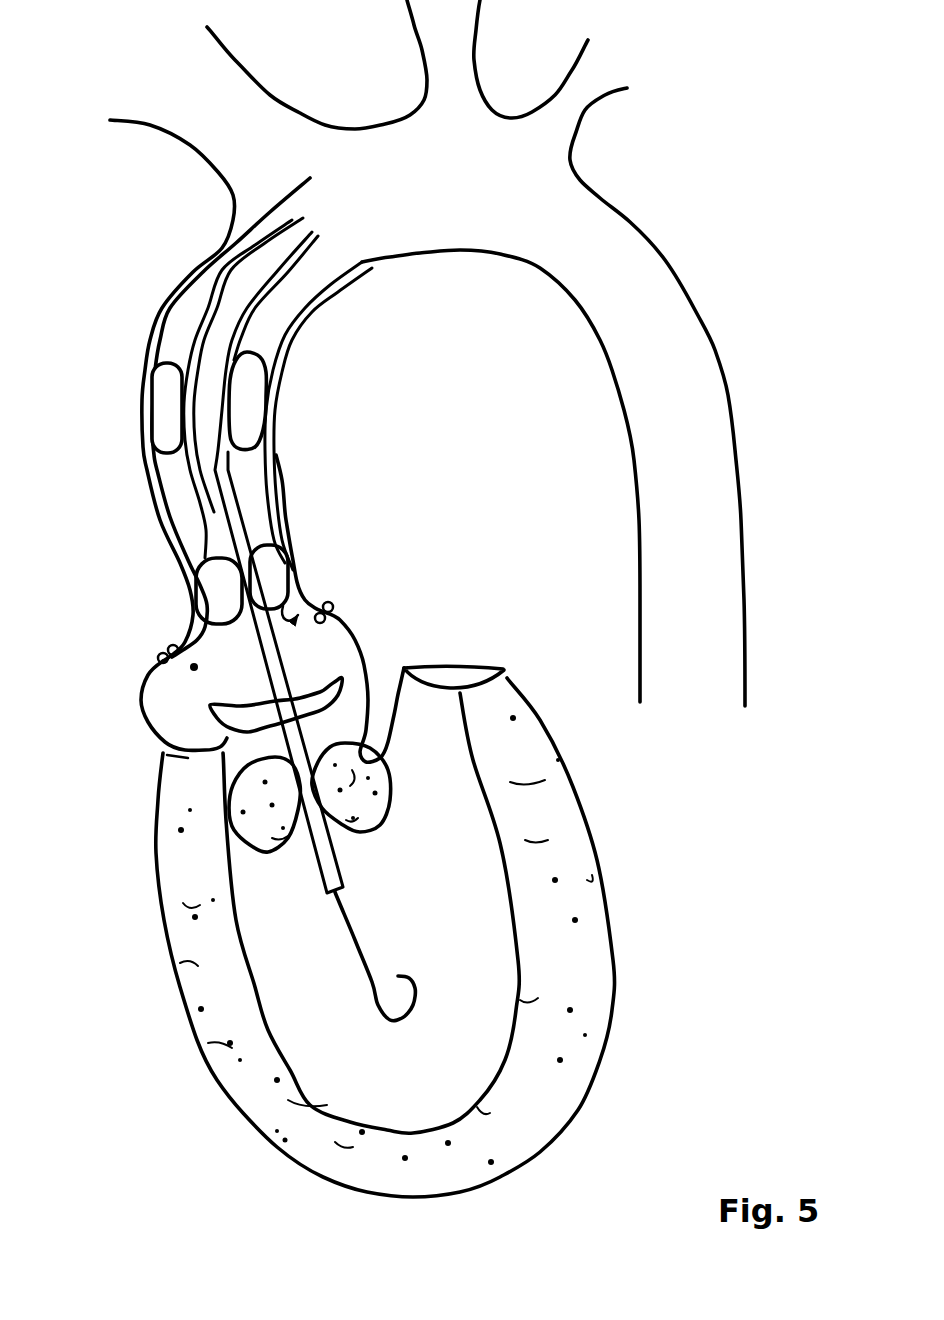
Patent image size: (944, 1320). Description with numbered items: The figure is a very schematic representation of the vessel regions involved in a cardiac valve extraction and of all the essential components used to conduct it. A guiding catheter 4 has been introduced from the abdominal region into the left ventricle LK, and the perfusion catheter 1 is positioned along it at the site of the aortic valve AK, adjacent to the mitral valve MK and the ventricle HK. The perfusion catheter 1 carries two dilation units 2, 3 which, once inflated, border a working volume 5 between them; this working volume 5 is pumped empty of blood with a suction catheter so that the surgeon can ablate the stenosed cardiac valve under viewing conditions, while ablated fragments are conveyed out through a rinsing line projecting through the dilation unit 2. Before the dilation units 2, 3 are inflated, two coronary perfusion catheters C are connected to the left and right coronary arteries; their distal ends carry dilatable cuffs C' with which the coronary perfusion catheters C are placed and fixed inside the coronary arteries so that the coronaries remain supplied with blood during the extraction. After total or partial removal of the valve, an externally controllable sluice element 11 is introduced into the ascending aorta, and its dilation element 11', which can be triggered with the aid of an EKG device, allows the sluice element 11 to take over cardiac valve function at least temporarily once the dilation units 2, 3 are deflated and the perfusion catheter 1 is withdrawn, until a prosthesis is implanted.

The perfusion catheter 1 is at (232, 496).
The dilation unit 2 is at (274, 556).
The dilation unit 3 is at (266, 804).
The guiding catheter 4 is at (420, 983).
The working volume 5 is at (190, 668).
The sluice element 11 is at (305, 377).
The dilation element 11' is at (216, 370).
The coronary perfusion catheter C is at (153, 571).
The cuff C' is at (232, 619).
The aortic valve AK is at (315, 678).
The mitral valve MK is at (410, 680).
The ventricle HK is at (478, 425).
The left ventricle LK is at (452, 887).